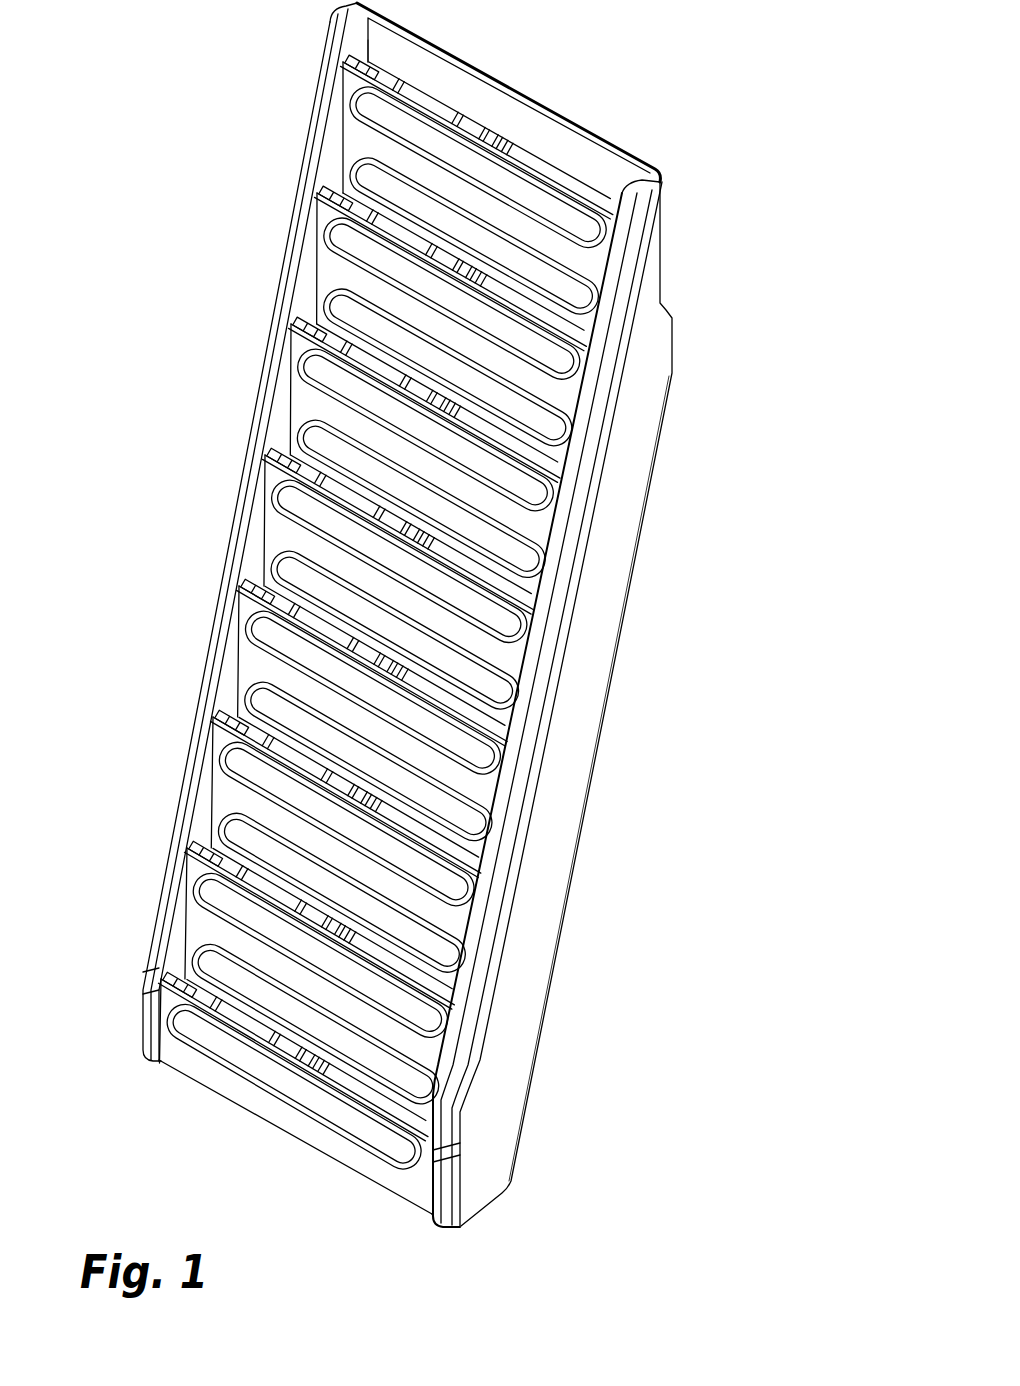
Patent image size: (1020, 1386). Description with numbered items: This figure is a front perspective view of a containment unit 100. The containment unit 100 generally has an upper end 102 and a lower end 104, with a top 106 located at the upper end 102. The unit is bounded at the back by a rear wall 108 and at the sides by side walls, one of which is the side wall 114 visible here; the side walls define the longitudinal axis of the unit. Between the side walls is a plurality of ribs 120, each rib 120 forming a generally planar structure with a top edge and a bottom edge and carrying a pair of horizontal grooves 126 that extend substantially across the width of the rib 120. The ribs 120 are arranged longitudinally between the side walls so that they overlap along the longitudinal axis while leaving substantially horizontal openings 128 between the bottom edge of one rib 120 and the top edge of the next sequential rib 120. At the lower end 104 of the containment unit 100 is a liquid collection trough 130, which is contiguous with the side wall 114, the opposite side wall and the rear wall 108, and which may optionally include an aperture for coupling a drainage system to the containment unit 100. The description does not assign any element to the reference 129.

The containment unit 100 is at (448, 657).
The upper end 102 is at (670, 60).
The lower end 104 is at (373, 1248).
The top 106 is at (536, 95).
The rear wall 108 is at (603, 718).
The side wall 114 is at (553, 855).
The rib 120 is at (502, 657).
The horizontal groove 126 is at (297, 558).
The horizontal opening 128 is at (243, 585).
The top surface 129 is at (596, 163).
The liquid collection trough 130 is at (248, 1100).